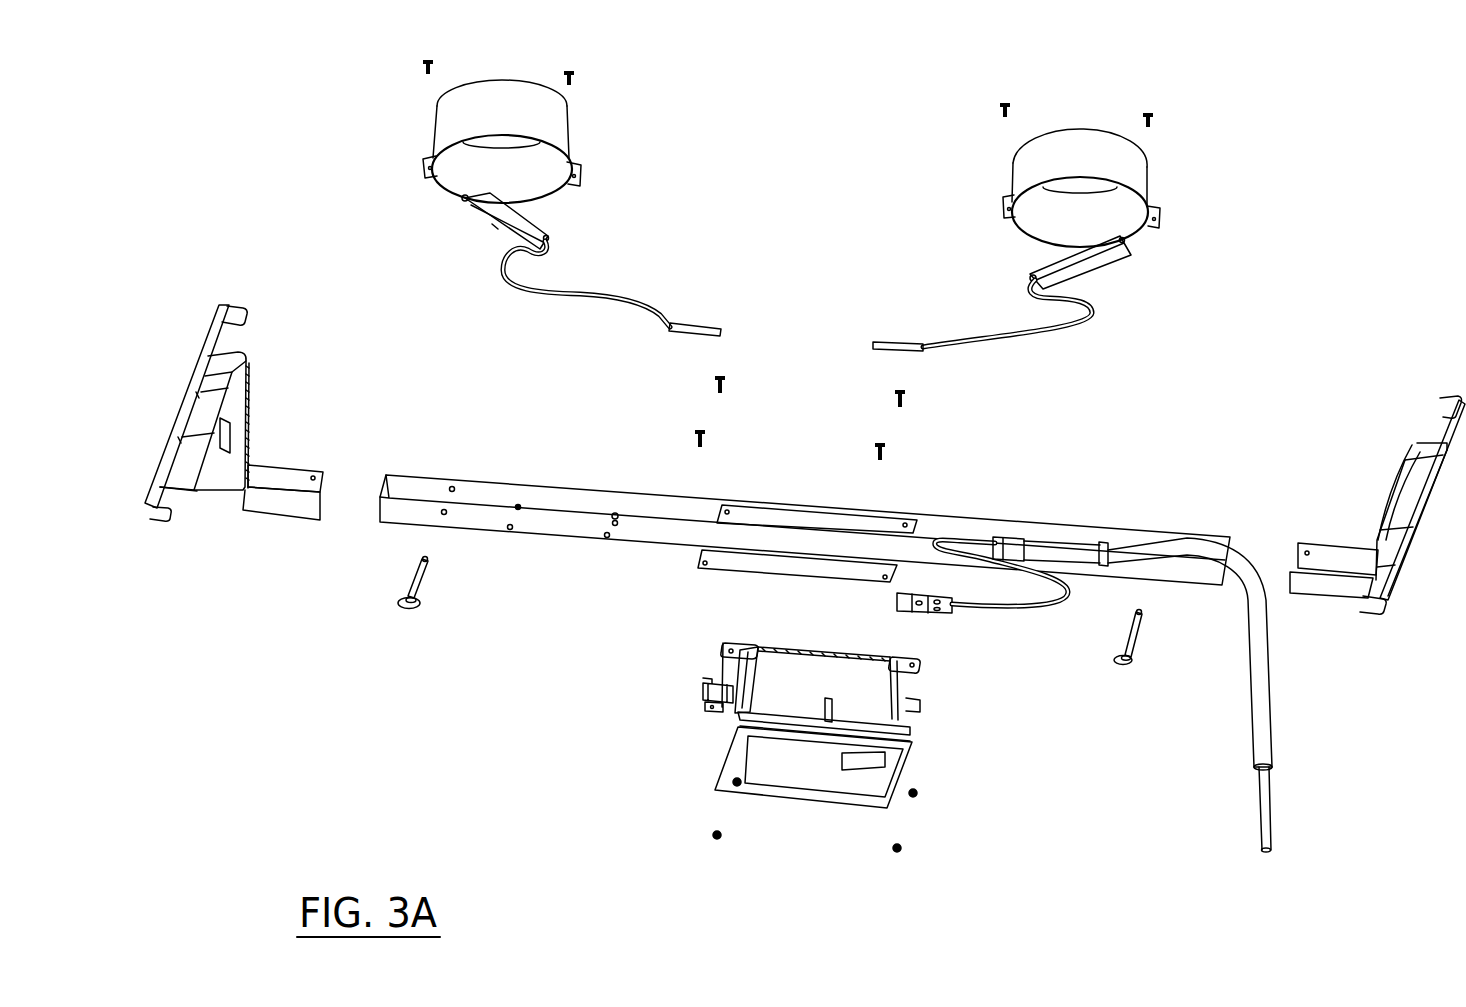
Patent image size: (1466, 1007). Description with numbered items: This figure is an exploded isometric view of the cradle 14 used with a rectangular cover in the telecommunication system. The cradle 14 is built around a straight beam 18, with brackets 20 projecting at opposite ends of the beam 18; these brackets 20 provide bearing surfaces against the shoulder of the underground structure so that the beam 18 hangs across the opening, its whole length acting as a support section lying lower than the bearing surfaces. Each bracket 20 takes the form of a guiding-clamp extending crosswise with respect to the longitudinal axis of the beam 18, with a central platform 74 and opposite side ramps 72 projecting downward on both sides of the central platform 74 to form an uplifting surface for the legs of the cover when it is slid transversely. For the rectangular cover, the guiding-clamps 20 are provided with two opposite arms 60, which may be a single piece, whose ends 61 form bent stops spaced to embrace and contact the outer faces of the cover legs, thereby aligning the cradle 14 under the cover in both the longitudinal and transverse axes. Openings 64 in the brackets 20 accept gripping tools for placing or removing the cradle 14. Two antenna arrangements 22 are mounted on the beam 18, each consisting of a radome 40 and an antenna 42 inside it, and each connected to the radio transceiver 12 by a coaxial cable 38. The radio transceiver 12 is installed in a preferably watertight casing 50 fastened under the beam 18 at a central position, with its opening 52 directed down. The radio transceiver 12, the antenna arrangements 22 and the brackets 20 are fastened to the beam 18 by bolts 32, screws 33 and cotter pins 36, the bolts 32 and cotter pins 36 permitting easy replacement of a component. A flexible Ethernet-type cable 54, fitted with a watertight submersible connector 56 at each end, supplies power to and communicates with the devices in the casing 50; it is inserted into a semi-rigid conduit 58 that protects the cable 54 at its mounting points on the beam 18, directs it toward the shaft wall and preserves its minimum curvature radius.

The radio transceiver 12 is at (841, 778).
The cradle 14 is at (862, 644).
The beam 18 is at (598, 488).
The brackets 20 is at (784, 412).
The antenna arrangements 22 is at (600, 134).
The bolts 32 is at (918, 798).
The screws 33 is at (726, 385).
The cotter pins 36 is at (430, 588).
The coaxial cables 38 is at (610, 290).
The radome 40 is at (500, 82).
The antenna 42 is at (484, 210).
The casing 50 is at (720, 720).
The opening 52 is at (814, 800).
The cable 54 is at (1270, 808).
The connector 56 is at (935, 613).
The semi-rigid conduit 58 is at (1272, 665).
The arms 60 is at (233, 426).
The ends 61 is at (238, 312).
The openings 64 is at (236, 434).
The side ramps 72 is at (230, 357).
The central platform 74 is at (212, 405).